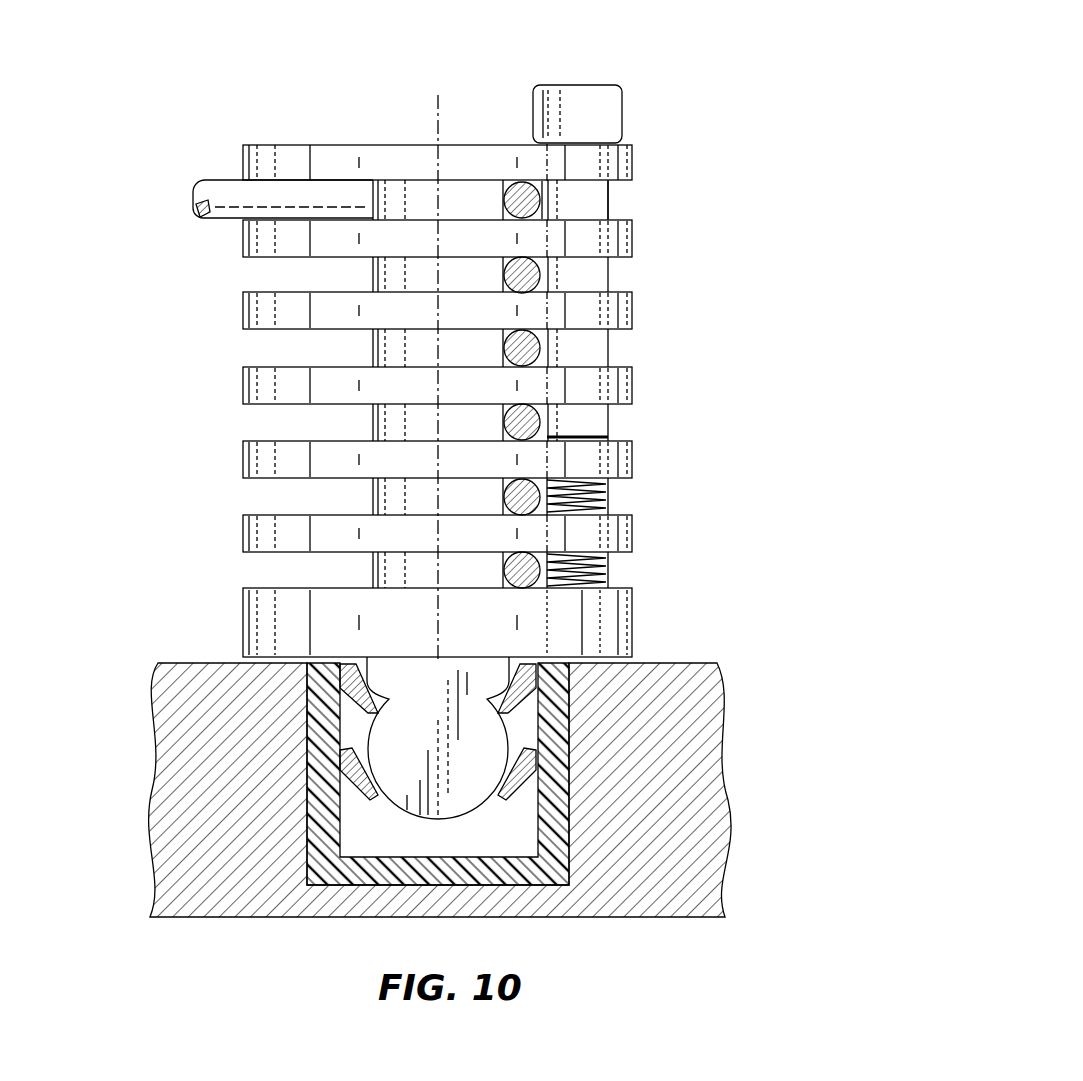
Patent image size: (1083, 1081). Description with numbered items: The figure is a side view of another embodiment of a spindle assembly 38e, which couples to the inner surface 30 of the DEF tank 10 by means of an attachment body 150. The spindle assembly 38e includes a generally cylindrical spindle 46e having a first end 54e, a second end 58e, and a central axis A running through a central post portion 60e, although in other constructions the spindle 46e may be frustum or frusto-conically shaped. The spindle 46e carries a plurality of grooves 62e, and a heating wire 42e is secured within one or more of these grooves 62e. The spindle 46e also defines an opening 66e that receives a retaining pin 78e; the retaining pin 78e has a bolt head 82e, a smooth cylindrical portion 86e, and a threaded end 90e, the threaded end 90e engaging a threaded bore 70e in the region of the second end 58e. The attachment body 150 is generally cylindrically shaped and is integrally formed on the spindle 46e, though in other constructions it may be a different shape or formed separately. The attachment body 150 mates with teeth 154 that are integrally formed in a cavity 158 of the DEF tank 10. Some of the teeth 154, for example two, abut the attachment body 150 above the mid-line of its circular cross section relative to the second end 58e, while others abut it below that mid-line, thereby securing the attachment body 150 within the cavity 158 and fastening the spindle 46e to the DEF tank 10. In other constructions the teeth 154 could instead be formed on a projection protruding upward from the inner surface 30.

The DEF tank 10 is at (101, 690).
The inner surface 30 is at (185, 657).
The attachment body 150 is at (453, 820).
The teeth 154 is at (503, 793).
The cavity 158 is at (404, 829).
The spindle assembly 38e is at (245, 108).
The central axis A is at (437, 118).
The first end 54e is at (383, 143).
The grooves 62e is at (628, 510).
The spindle 46e is at (243, 310).
The second end 58e is at (247, 672).
The threaded bore 70e is at (600, 607).
The central post portion 60e is at (373, 347).
The heating wire 42e is at (512, 184).
The retaining pin 78e is at (631, 67).
The bolt head 82e is at (568, 85).
The opening 66e is at (588, 157).
The smooth cylindrical portion 86e is at (612, 190).
The threaded end 90e is at (608, 567).